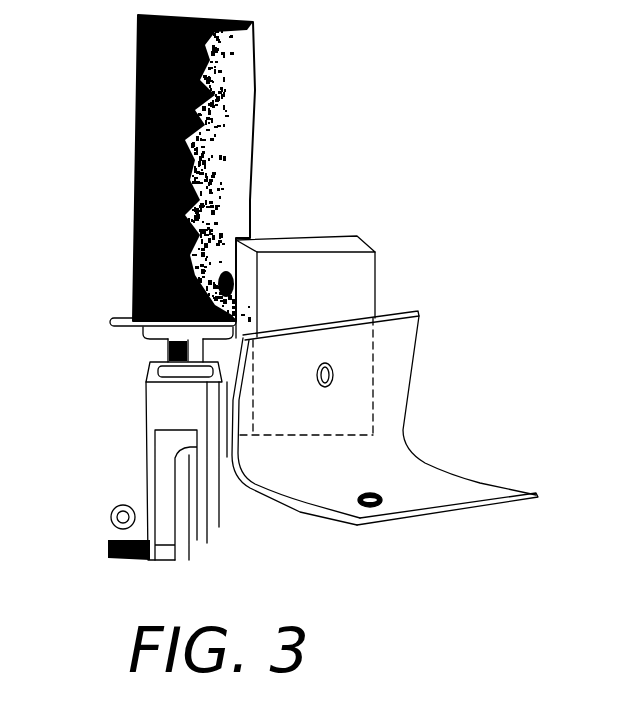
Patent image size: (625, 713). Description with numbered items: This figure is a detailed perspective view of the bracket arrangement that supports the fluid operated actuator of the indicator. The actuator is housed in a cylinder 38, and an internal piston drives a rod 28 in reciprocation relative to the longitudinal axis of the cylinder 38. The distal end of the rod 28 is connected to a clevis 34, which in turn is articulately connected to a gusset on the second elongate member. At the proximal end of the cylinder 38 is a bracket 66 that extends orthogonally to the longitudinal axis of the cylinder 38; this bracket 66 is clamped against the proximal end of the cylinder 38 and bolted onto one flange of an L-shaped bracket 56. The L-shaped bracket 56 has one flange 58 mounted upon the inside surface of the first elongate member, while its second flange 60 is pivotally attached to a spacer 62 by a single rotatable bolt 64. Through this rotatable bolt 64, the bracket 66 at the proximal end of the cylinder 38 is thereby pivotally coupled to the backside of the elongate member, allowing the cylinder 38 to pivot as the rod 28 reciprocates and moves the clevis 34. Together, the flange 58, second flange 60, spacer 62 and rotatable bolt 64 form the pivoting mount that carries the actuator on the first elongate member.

The cylinder 38 is at (255, 88).
The bracket 66 is at (117, 316).
The rod 28 is at (168, 346).
The clevis 34 is at (146, 462).
The spacer 62 is at (377, 272).
The second flange 60 is at (412, 375).
The flange 58 is at (487, 478).
The L-shaped bracket 56 is at (362, 481).
The rotatable bolt 64 is at (333, 373).